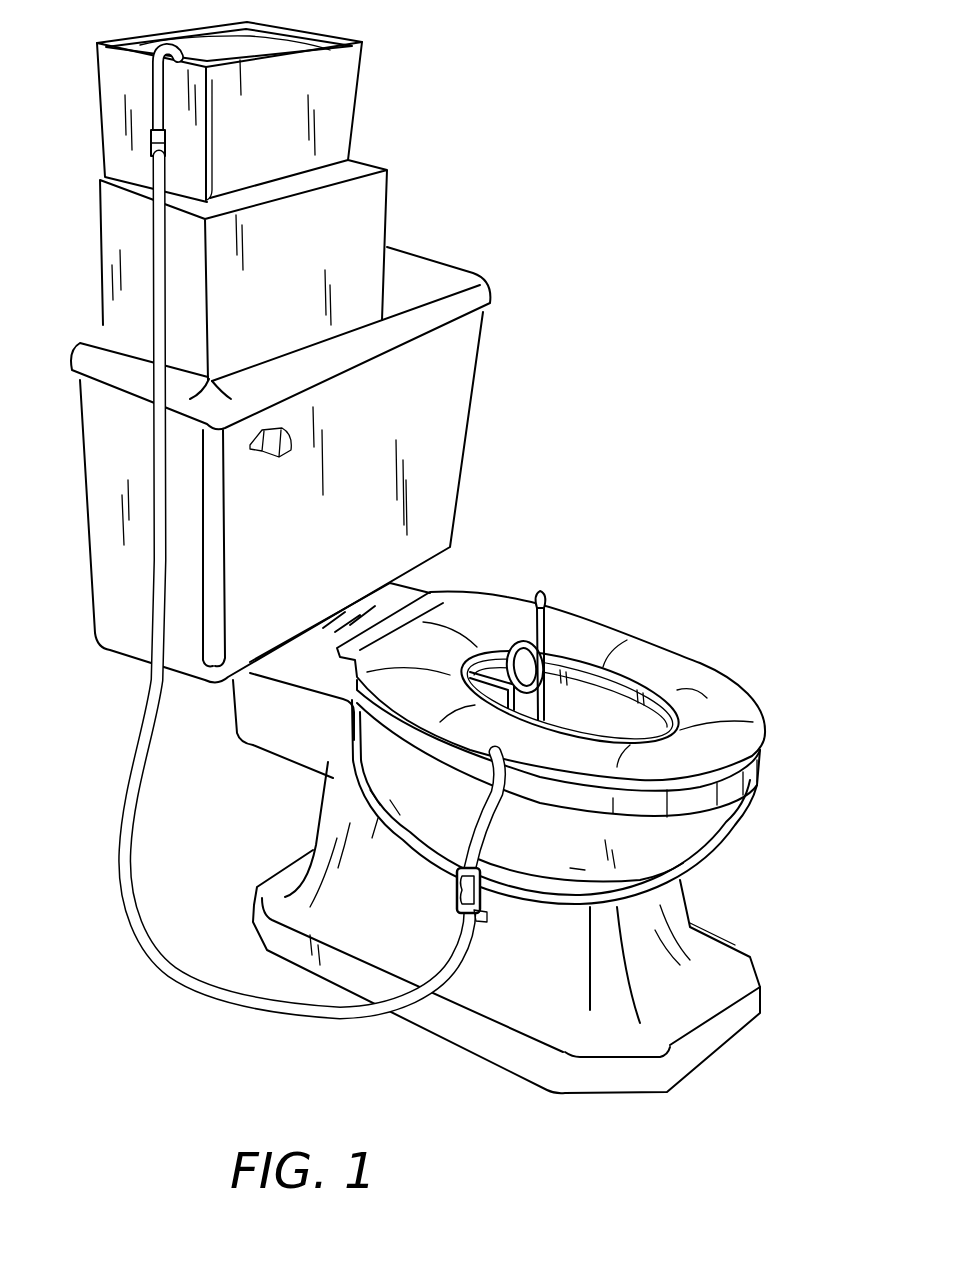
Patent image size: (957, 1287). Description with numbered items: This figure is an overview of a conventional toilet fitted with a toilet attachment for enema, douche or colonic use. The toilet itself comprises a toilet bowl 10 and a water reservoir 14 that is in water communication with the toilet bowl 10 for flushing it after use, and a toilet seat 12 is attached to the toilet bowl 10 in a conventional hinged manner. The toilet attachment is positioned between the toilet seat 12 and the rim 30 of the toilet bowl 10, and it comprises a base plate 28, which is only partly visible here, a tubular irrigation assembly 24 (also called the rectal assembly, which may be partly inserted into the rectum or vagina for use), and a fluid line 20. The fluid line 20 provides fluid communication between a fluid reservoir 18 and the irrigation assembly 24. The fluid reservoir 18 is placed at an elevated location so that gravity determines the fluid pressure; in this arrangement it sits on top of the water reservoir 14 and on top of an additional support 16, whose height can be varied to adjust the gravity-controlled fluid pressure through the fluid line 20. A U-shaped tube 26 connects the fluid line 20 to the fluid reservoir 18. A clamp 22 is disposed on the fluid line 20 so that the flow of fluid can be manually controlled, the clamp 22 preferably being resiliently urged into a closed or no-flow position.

The toilet bowl 10 is at (705, 848).
The toilet seat 12 is at (637, 655).
The water reservoir 14 is at (445, 410).
The support 16 is at (368, 228).
The fluid reservoir 18 is at (348, 86).
The fluid line 20 is at (147, 748).
The clamp 22 is at (453, 895).
The tubular irrigation assembly 24 is at (545, 645).
The U-shaped tube 26 is at (152, 96).
The base plate 28 is at (476, 665).
The rim 30 is at (752, 772).